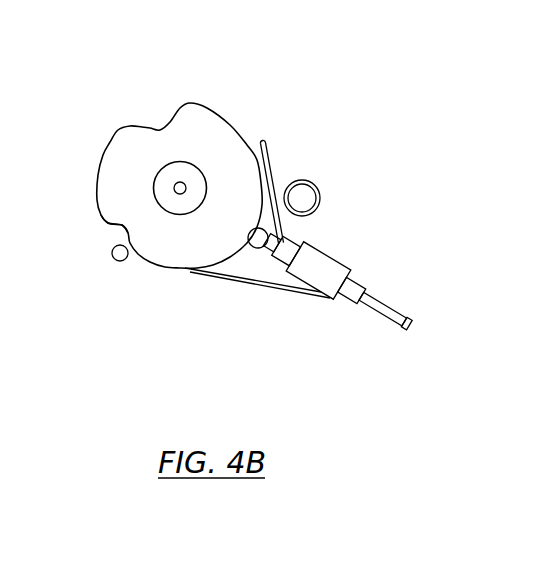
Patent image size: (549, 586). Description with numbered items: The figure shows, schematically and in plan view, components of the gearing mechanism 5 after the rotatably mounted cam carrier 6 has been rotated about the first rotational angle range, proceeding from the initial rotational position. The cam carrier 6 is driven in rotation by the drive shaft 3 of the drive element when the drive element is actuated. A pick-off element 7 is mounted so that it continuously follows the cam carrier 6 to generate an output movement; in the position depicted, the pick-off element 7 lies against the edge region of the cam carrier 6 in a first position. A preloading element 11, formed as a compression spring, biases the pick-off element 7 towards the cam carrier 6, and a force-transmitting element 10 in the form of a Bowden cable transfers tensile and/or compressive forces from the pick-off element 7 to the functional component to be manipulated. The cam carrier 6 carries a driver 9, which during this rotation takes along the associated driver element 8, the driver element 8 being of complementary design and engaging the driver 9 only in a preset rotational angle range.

The drive shaft 3 is at (180, 187).
The gearing mechanism 5 is at (298, 93).
The cam carrier 6 is at (124, 182).
The pick-off element 7 is at (263, 242).
The driver element 8 is at (113, 260).
The driver 9 is at (117, 230).
The force-transmitting element 10 is at (402, 317).
The preloading element 11 is at (318, 188).